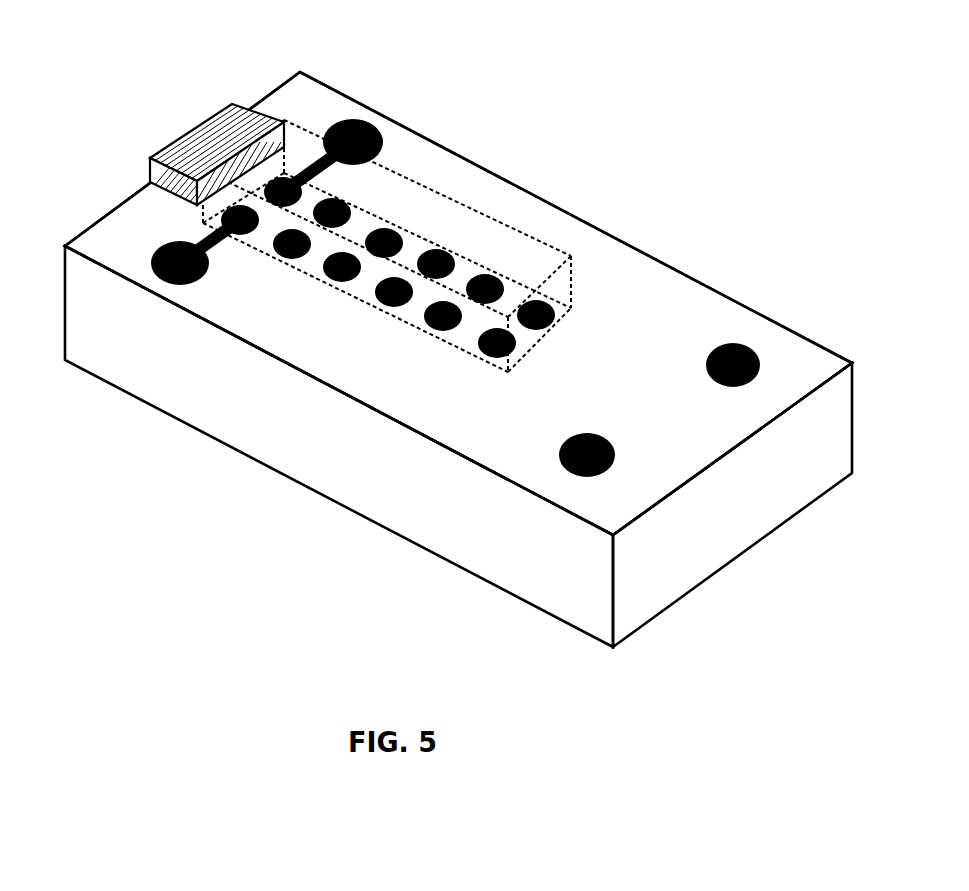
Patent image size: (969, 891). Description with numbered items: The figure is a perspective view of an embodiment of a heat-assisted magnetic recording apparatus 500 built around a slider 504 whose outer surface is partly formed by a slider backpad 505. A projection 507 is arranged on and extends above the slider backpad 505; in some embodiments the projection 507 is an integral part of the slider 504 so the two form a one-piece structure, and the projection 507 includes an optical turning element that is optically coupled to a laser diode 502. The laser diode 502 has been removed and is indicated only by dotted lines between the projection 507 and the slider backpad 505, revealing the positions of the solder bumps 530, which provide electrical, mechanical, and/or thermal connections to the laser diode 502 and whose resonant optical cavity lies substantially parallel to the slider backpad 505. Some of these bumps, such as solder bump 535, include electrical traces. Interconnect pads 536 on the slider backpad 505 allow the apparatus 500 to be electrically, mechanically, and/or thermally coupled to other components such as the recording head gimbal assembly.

The apparatus 500 is at (577, 52).
The laser diode 502 is at (397, 173).
The slider 504 is at (497, 173).
The slider backpad 505 is at (640, 307).
The projection 507 is at (197, 123).
The solder bumps 530 is at (333, 255).
The solder bump 535 is at (222, 213).
The interconnect pads 536 is at (735, 342).